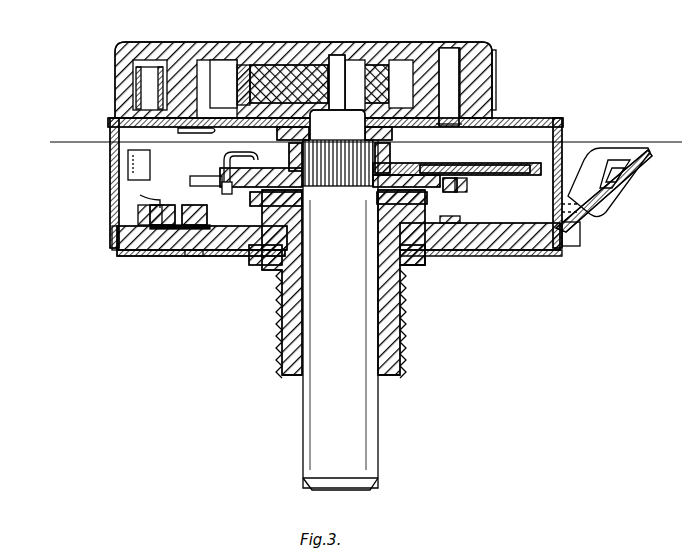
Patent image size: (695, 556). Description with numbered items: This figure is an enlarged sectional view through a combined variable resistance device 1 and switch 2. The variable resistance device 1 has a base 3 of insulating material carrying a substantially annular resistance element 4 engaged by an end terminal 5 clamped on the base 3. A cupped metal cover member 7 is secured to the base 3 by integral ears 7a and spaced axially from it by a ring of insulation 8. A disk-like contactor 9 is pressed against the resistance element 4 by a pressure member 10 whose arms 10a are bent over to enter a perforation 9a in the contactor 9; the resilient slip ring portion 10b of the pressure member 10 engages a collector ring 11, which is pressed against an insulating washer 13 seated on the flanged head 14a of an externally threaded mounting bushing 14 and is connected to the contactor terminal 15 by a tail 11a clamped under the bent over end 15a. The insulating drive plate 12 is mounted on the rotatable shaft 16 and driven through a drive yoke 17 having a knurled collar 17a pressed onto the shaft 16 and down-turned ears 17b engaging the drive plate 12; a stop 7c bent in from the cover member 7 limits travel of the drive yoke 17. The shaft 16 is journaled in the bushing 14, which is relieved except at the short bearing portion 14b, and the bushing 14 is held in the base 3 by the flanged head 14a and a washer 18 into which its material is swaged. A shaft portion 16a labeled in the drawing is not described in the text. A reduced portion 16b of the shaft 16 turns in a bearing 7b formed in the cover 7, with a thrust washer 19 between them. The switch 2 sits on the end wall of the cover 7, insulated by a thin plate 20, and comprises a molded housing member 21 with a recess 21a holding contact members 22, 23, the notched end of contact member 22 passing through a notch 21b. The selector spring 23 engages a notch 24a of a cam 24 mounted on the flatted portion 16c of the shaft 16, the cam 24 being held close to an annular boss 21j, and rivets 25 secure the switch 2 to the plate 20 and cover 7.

The variable resistance device 1 is at (105, 233).
The switch 2 is at (502, 73).
The base 3 is at (120, 250).
The resistance element 4 is at (65, 130).
The end terminal 5 is at (612, 150).
The cover member 7 is at (110, 133).
The integral ears 7a is at (205, 252).
The bearing 7b is at (275, 132).
The stop 7c is at (130, 170).
The ring of insulation 8 is at (560, 142).
The contactor 9 is at (138, 200).
The perforation 9a is at (168, 248).
The pressure member 10 is at (252, 186).
The arms 10a is at (195, 250).
The slip ring portion 10b is at (452, 192).
The collector ring 11 is at (246, 250).
The tail 11a is at (440, 250).
The drive plate 12 is at (465, 170).
The insulating washer 13 is at (265, 258).
The mounting bushing 14 is at (404, 336).
The flanged head 14a is at (412, 262).
The bearing portion 14b is at (392, 376).
The contactor terminal 15 is at (608, 196).
The bent over end 15a is at (465, 220).
The shaft 16 is at (378, 432).
The shaft shoulder 16a is at (392, 158).
The reduced portion 16b is at (337, 125).
The flatted portion 16c is at (344, 58).
The drive yoke 17 is at (440, 163).
The knurled collar 17a is at (252, 168).
The down-turned ears 17b is at (210, 175).
The washer 18 is at (410, 282).
The thrust washer 19 is at (292, 148).
The insulating plate 20 is at (532, 118).
The housing member 21 is at (498, 50).
The recess 21a is at (212, 42).
The notch 21b is at (352, 62).
The annular boss 21j is at (279, 70).
The contact member 22 is at (118, 56).
The selector spring 23 is at (218, 70).
The cam 24 is at (265, 48).
The notch 24a is at (400, 85).
The rivets 25 is at (448, 48).